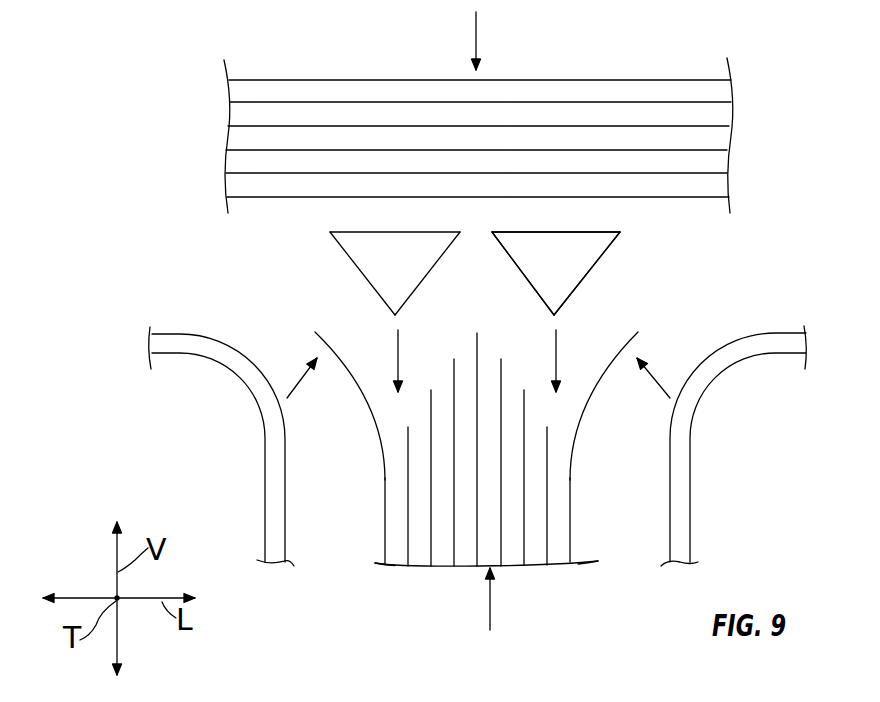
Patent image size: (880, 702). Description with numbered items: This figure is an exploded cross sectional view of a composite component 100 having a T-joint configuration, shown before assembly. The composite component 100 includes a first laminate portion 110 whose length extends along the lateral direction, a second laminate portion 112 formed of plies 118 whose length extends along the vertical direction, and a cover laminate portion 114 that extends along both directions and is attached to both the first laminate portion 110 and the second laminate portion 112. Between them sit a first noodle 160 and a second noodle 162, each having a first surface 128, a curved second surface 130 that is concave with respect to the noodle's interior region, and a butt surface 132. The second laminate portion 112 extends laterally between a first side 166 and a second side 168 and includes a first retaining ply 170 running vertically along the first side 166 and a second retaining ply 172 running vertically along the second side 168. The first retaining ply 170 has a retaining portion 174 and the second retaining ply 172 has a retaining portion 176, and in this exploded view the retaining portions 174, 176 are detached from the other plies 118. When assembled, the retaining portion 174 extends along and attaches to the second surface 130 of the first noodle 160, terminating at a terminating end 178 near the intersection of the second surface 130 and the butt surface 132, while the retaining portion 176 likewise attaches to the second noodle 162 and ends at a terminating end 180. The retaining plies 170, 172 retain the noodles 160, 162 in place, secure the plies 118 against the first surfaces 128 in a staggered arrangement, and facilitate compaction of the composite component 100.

The composite component 100 is at (192, 58).
The first laminate portion 110 is at (622, 74).
The second laminate portion 112 is at (515, 569).
The cover laminate portion 114 is at (258, 446).
The plies 118 is at (447, 522).
The first surface 128 is at (437, 263).
The second surface 130 is at (378, 291).
The butt surface 132 is at (401, 230).
The first noodle 160 is at (457, 265).
The second noodle 162 is at (587, 255).
The first side 166 is at (383, 569).
The second side 168 is at (572, 569).
The first retaining ply 170 is at (384, 500).
The second retaining ply 172 is at (571, 515).
The retaining portion 174 is at (350, 382).
The retaining portion 176 is at (607, 378).
The terminating end 178 is at (305, 322).
The terminating end 180 is at (641, 322).